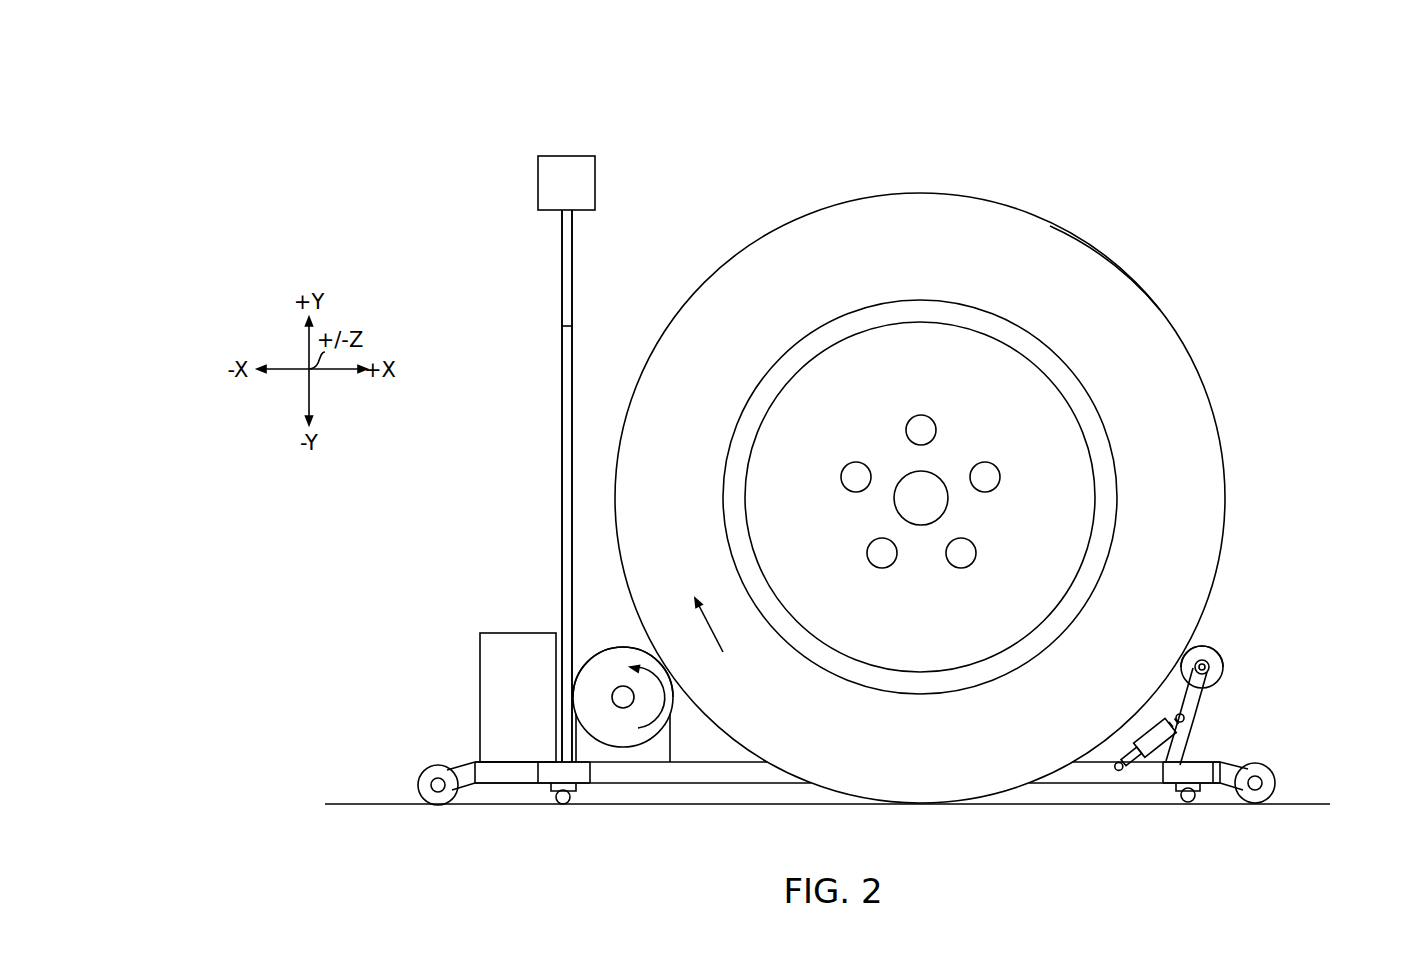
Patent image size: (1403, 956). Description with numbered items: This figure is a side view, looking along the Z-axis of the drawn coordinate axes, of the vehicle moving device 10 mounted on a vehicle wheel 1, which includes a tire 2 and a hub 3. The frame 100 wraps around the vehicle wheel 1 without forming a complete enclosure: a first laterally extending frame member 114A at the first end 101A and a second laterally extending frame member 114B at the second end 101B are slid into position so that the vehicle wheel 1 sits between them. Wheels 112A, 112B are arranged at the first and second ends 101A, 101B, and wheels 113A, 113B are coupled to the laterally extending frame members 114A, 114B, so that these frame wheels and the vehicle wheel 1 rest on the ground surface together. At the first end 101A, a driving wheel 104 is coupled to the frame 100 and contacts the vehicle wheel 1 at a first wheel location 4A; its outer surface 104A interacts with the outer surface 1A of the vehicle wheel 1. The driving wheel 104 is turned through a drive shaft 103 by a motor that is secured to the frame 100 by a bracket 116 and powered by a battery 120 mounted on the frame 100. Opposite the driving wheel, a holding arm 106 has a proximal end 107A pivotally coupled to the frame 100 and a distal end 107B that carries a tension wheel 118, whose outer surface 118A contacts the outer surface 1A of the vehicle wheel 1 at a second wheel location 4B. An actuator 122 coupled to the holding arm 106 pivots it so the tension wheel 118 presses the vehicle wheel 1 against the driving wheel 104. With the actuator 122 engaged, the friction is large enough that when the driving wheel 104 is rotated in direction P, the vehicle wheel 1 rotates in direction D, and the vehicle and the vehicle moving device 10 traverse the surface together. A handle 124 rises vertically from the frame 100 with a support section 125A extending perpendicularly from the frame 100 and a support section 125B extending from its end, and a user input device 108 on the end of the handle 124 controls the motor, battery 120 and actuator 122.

The vehicle wheel 1 is at (830, 183).
The outer surface of the vehicle wheel 1A is at (1112, 258).
The tire 2 is at (922, 197).
The hub 3 is at (952, 338).
The vehicle moving device 10 is at (1255, 240).
The frame 100 is at (1060, 788).
The first end 101A is at (493, 788).
The second end 101B is at (1228, 788).
The drive shaft 103 is at (612, 697).
The driving wheel 104 is at (666, 712).
The outer surface of the driving wheel 104A is at (620, 650).
The holding arm 106 is at (1176, 698).
The proximal end 107A is at (1193, 732).
The distal end 107B is at (1205, 698).
The user input device 108 is at (538, 180).
The wheel 112A is at (445, 765).
The wheel 112B is at (1268, 770).
The wheel 113A is at (552, 791).
The wheel 113B is at (1198, 792).
The first laterally extending frame member 114A is at (536, 772).
The second laterally extending frame member 114B is at (1150, 790).
The bracket 116 is at (672, 742).
The tension wheel 118 is at (1218, 648).
The outer surface of the tension wheel 118A is at (1222, 655).
The battery 120 is at (518, 633).
The actuator 122 is at (1150, 728).
The handle 124 is at (562, 413).
The support section 125A is at (562, 478).
The support section 125B is at (562, 282).
The first wheel location 4A is at (665, 655).
The second wheel location 4B is at (1188, 645).
The direction P is at (660, 680).
The direction D is at (705, 605).